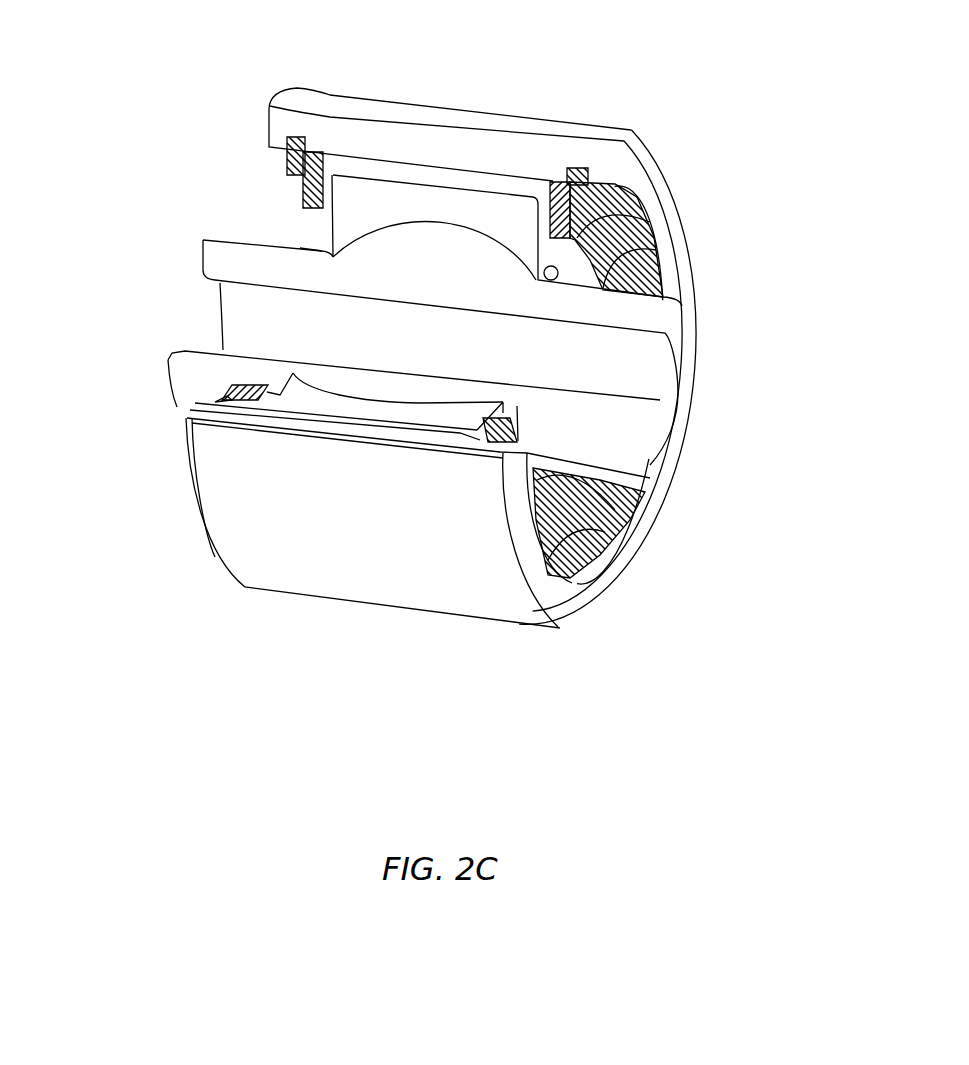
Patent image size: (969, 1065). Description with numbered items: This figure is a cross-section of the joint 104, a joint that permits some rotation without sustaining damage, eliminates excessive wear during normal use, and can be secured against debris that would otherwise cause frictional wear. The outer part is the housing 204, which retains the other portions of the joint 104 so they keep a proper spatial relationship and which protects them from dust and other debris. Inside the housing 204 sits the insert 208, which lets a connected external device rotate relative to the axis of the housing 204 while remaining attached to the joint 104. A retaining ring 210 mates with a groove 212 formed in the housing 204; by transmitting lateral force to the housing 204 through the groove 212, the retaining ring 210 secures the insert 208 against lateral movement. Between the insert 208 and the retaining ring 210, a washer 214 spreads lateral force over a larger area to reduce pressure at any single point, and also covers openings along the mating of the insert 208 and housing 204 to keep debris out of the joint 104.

The joint 104 is at (147, 65).
The housing 204 is at (273, 572).
The insert 208 is at (462, 200).
The retaining ring 210 is at (580, 188).
The groove 212 is at (568, 187).
The washer 214 is at (590, 235).